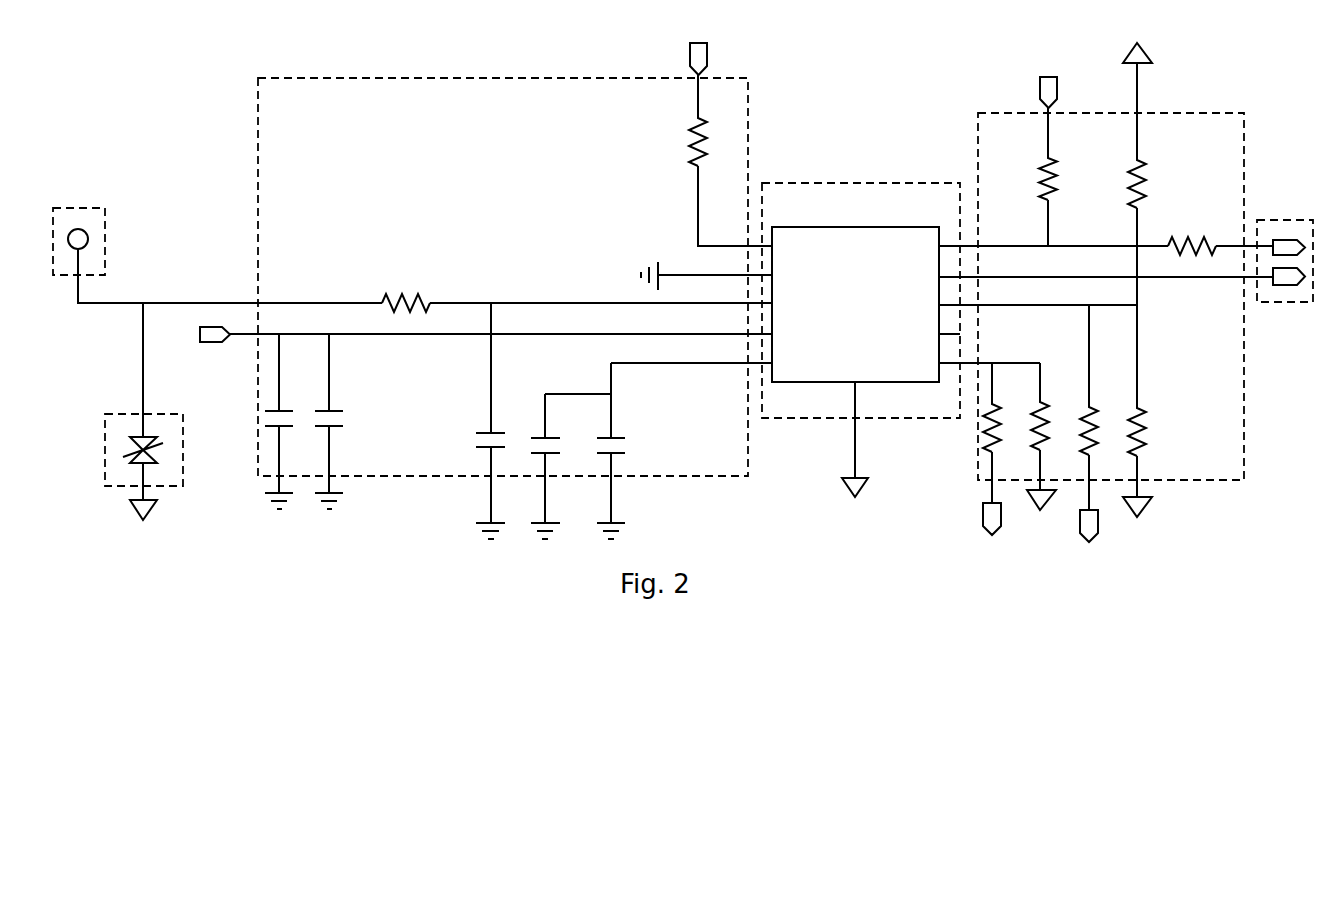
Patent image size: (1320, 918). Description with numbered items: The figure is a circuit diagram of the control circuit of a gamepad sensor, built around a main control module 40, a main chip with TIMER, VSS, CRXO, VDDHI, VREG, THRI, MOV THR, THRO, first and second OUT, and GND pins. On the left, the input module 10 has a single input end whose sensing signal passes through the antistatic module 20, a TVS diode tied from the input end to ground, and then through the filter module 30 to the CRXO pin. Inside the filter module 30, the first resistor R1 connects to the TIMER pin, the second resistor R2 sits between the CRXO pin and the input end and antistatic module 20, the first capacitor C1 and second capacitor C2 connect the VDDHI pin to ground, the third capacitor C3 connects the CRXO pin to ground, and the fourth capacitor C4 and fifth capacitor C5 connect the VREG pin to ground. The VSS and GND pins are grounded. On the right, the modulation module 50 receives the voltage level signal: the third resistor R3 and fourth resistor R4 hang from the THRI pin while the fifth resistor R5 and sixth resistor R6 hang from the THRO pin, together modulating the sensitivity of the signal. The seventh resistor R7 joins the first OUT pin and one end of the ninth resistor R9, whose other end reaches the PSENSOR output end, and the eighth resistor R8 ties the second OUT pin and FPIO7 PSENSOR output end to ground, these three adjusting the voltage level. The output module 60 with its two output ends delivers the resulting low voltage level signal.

The input module 10 is at (76, 208).
The antistatic module 20 is at (172, 486).
The filter module 30 is at (258, 113).
The main control module 40 is at (872, 183).
The modulation module 50 is at (1187, 112).
The output module 60 is at (1293, 220).
The first resistor R1 is at (708, 130).
The second resistor R2 is at (392, 300).
The third resistor R3 is at (985, 428).
The fourth resistor R4 is at (1042, 442).
The fifth resistor R5 is at (1090, 443).
The sixth resistor R6 is at (1143, 437).
The seventh resistor R7 is at (1047, 158).
The eighth resistor R8 is at (1138, 172).
The ninth resistor R9 is at (1195, 240).
The first capacitor C1 is at (267, 426).
The second capacitor C2 is at (342, 426).
The third capacitor C3 is at (476, 447).
The fourth capacitor C4 is at (540, 453).
The fifth capacitor C5 is at (618, 453).